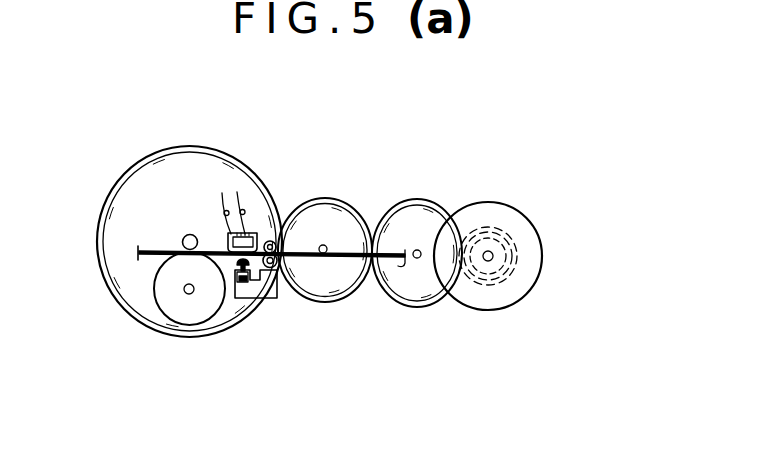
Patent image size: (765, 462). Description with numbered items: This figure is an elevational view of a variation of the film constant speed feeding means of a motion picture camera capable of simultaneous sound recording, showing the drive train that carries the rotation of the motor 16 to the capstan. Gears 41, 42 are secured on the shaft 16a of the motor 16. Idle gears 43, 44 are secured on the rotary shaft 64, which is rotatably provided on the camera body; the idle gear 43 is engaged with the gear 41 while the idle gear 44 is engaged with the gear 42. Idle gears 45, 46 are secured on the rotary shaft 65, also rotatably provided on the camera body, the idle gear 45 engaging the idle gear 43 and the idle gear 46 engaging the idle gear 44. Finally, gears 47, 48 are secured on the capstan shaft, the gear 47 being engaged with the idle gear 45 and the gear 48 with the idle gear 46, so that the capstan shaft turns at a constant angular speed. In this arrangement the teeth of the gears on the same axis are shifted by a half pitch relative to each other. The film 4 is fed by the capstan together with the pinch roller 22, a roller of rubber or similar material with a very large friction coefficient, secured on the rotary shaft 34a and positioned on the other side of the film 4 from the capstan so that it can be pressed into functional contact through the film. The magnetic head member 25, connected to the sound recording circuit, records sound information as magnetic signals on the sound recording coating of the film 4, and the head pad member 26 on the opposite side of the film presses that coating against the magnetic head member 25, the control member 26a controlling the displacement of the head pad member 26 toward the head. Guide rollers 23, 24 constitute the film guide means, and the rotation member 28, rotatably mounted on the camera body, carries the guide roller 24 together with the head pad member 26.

The film 4 is at (152, 254).
The motor 16 is at (498, 266).
The shaft of the motor 16a is at (488, 251).
The pinch roller 22 is at (184, 238).
The guide roller 23 is at (273, 238).
The guide roller 24 is at (276, 265).
The magnetic head member 25 is at (230, 240).
The head pad member 26 is at (255, 299).
The control member 26a is at (272, 300).
The rotation member 28 is at (263, 294).
The rotary shaft 34a is at (190, 296).
The gear 41 is at (489, 285).
The gear 42 is at (502, 287).
The idle gear 43 is at (417, 283).
The idle gear 44 is at (428, 304).
The idle gear 45 is at (338, 292).
The idle gear 46 is at (355, 296).
The gear 47 is at (189, 266).
The gear 48 is at (135, 316).
The rotary shaft 64 is at (417, 250).
The rotary shaft 65 is at (324, 245).